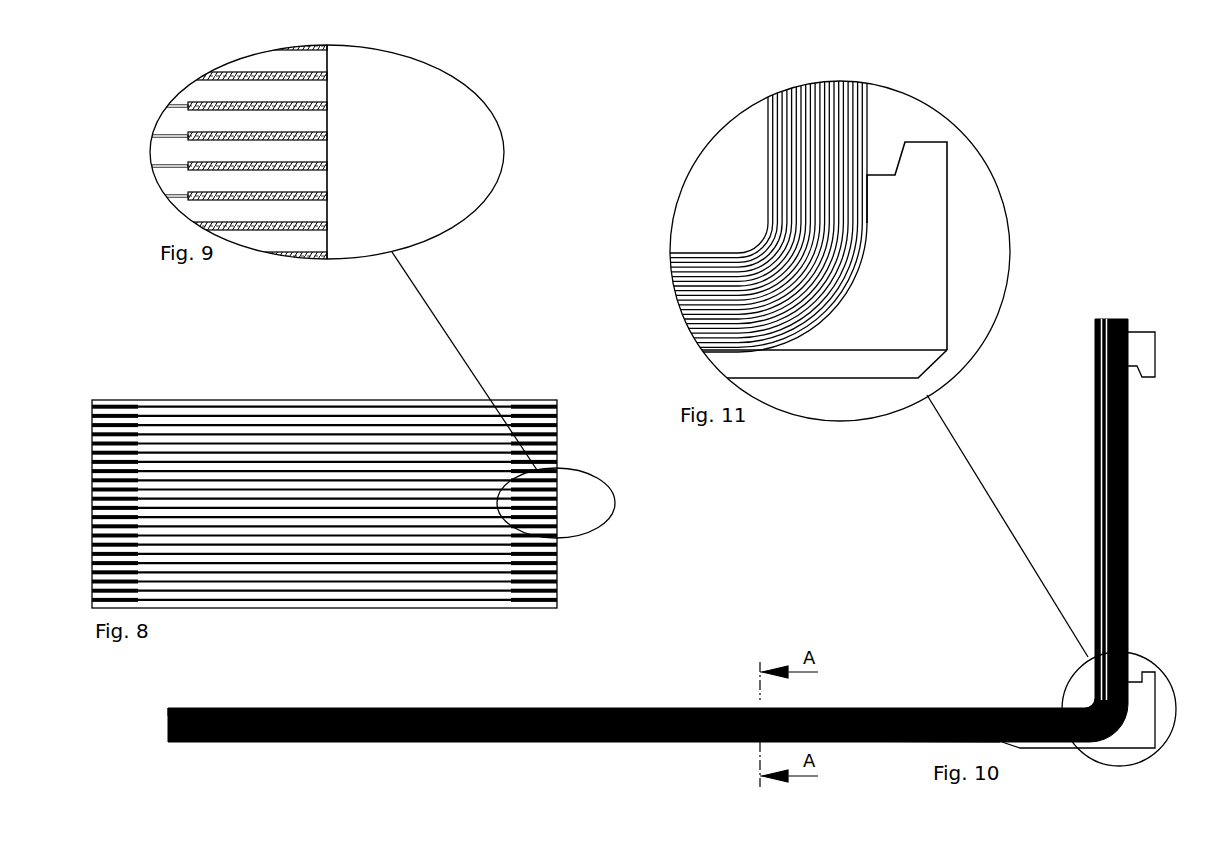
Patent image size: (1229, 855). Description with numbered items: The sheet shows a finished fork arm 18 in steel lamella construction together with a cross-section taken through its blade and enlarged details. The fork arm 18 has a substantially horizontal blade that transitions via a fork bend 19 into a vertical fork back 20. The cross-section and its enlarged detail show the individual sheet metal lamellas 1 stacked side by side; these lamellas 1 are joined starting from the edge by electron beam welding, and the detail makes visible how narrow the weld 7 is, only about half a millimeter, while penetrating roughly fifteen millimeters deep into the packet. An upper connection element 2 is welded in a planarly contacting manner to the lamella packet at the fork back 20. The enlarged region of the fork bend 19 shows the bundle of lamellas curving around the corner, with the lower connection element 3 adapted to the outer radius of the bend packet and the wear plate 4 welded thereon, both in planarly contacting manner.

In FIG. 9, the lamella 1 is at (178, 122).
In FIG. 9, the weld 7 is at (327, 103).
In FIG. 11, the lower connection element 3 is at (895, 202).
In FIG. 11, the wear plate 4 is at (810, 448).
In FIG. 10, the upper connection element 2 is at (1145, 343).
In FIG. 10, the fork back 20 is at (1128, 505).
In FIG. 10, the fork arm 18 is at (900, 742).
In FIG. 10, the fork bend 19 is at (1120, 725).